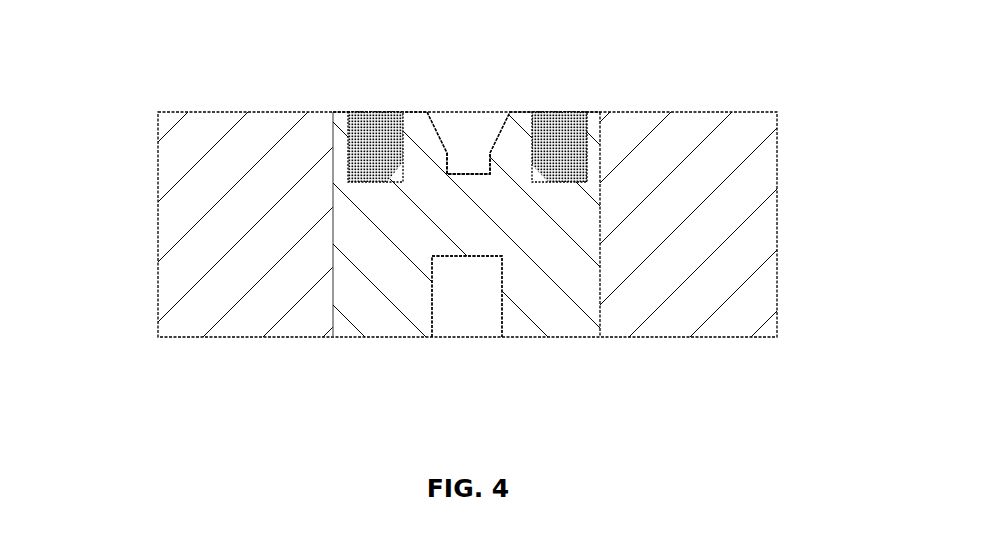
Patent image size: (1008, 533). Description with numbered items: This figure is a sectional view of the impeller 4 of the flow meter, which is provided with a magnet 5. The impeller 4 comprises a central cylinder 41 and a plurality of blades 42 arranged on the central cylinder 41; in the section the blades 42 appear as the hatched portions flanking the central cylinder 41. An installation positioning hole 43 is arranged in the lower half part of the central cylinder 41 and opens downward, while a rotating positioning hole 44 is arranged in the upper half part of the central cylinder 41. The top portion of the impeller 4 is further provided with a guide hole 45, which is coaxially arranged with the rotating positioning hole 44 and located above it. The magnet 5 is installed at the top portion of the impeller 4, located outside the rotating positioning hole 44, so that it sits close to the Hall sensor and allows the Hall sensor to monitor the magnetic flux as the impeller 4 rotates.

The impeller 4 is at (133, 158).
The magnet 5 is at (382, 145).
The central cylinder 41 is at (558, 305).
The blades 42 is at (738, 224).
The installation positioning hole 43 is at (468, 313).
The rotating positioning hole 44 is at (462, 163).
The guide hole 45 is at (468, 127).